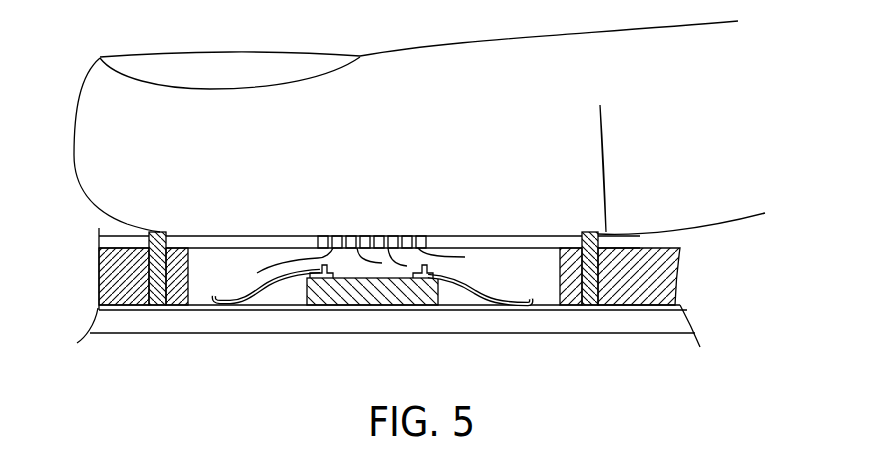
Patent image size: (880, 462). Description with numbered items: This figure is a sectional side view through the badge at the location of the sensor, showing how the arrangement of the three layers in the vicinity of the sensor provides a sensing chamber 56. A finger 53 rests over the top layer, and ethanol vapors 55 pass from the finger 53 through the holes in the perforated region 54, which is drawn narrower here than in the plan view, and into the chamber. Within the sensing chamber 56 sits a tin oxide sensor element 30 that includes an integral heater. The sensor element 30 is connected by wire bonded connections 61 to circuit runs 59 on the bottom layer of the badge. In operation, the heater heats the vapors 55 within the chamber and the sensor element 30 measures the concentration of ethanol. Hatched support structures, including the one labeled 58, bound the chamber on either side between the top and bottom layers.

The finger 53 is at (551, 180).
The perforated region 54 is at (372, 237).
The ethanol vapors 55 is at (256, 275).
The wire bonded connections 61 is at (461, 270).
The sensing chamber 56 is at (160, 298).
The support column 58 is at (586, 293).
The circuit runs 59 is at (200, 310).
The tin oxide sensor element 30 is at (373, 300).